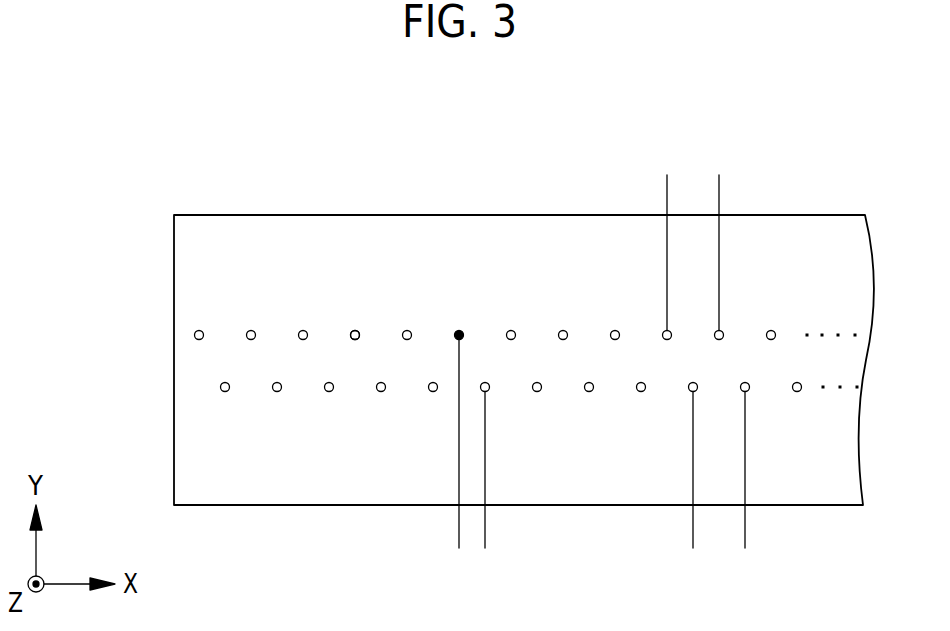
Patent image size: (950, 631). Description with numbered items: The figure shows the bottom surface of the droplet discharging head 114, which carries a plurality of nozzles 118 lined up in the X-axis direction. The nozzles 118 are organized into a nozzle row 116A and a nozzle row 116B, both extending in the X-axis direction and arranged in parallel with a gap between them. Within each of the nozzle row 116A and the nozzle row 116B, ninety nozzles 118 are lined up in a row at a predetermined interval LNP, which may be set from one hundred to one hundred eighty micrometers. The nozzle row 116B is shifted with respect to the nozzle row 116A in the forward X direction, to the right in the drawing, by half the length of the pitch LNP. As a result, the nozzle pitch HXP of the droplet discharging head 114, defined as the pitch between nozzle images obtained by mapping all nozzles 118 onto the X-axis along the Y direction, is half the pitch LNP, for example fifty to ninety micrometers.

The droplet discharging head 114 is at (586, 147).
The nozzle row 116A is at (174, 333).
The nozzle row 116B is at (204, 392).
The nozzle 118 is at (277, 382).
The nozzle pitch LNP is at (635, 180).
The nozzle pitch in the X-axis direction HXP is at (427, 538).